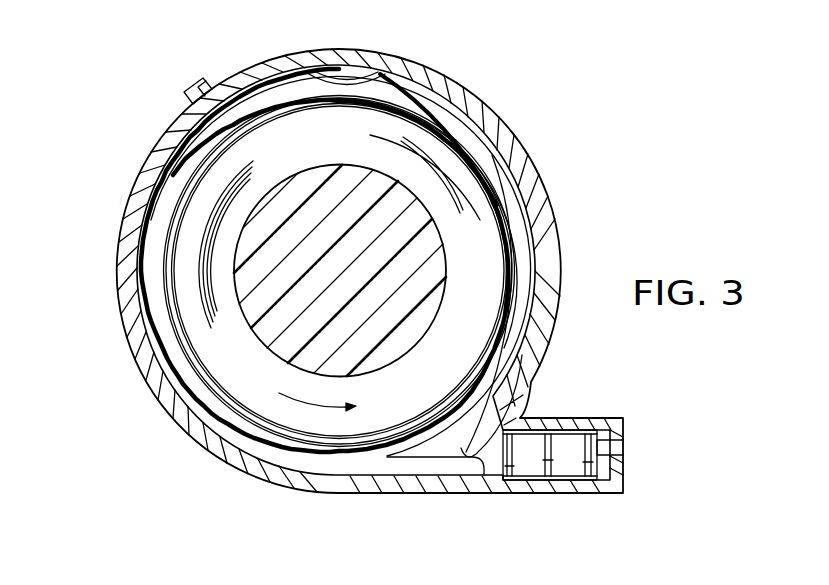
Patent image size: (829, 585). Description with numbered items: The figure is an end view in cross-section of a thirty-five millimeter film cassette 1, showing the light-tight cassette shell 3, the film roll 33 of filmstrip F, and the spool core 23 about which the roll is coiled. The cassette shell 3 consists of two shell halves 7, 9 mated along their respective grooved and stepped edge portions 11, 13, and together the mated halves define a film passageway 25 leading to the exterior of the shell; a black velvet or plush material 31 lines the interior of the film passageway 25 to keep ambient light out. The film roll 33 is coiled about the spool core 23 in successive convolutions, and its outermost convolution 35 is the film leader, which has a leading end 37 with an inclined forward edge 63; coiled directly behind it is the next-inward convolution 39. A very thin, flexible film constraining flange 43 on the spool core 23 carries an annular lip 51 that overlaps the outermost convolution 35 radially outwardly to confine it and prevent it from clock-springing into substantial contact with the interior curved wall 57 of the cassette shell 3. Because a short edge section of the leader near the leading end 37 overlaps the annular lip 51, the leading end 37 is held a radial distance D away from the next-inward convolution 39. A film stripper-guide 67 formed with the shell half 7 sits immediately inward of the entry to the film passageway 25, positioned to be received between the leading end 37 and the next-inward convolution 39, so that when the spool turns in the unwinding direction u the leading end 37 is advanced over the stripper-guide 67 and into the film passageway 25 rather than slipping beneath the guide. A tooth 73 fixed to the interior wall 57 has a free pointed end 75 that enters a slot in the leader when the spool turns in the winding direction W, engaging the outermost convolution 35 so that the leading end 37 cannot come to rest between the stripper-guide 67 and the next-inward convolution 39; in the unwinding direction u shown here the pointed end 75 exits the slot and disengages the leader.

The film cassette 1 is at (137, 152).
The cassette shell 3 is at (252, 62).
The shell half 7 is at (480, 148).
The shell half 9 is at (120, 186).
The grooved and stepped edge portion 11 is at (183, 103).
The grooved and stepped edge portion 13 is at (220, 84).
The spool core 23 is at (430, 264).
The film passageway 25 is at (492, 478).
The plush material 31 is at (575, 432).
The film roll 33 is at (488, 152).
The outermost convolution 35 is at (505, 190).
The leading end 37 is at (132, 270).
The next-inward convolution 39 is at (520, 215).
The film constraining flange 43 is at (195, 402).
The annular lip 51 is at (148, 390).
The interior curved wall 57 is at (230, 434).
The forward edge 63 is at (175, 296).
The film stripper-guide 67 is at (455, 418).
The tooth 73 is at (357, 80).
The free pointed end 75 is at (337, 72).
The radial distance D is at (192, 244).
The filmstrip F is at (165, 366).
The winding direction W is at (282, 392).
The unwinding direction u is at (360, 398).